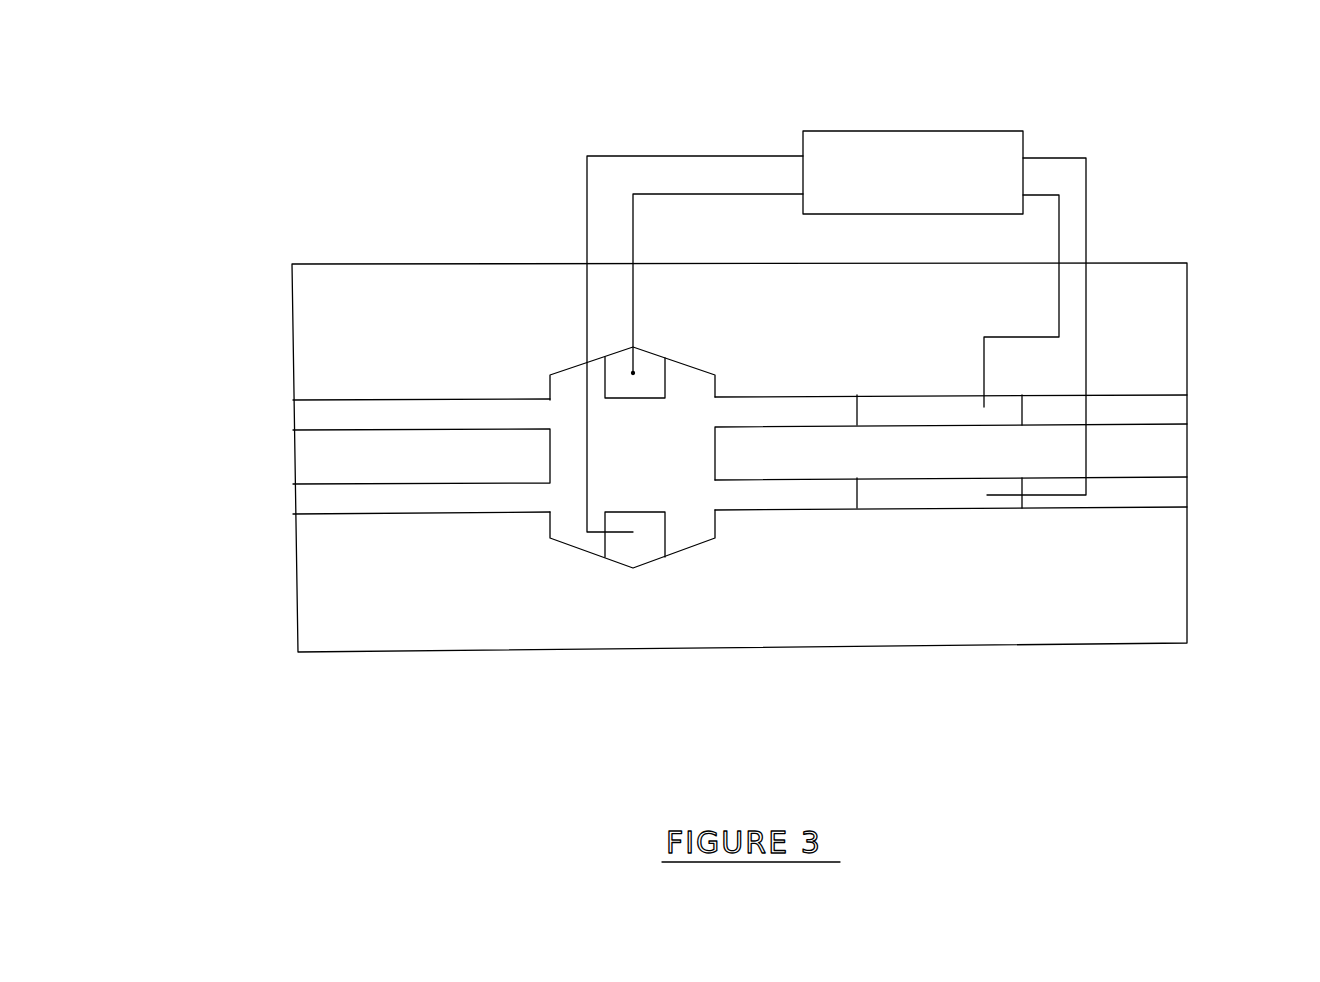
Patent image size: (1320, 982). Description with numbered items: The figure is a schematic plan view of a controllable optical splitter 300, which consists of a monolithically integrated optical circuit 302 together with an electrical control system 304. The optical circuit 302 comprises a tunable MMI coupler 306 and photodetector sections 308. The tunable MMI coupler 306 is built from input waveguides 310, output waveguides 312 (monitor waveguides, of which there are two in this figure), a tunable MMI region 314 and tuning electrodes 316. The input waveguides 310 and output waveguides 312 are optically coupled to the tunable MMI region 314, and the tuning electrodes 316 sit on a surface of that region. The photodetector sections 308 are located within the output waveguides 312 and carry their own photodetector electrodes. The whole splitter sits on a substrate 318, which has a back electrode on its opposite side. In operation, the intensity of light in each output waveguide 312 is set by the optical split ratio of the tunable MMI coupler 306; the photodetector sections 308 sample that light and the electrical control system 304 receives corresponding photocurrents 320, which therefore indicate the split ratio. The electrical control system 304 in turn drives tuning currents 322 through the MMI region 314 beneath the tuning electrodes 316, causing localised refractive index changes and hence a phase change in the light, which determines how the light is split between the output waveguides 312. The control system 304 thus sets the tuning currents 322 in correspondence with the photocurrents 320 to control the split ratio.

The controllable optical splitter 300 is at (316, 117).
The monolithically integrated optical circuit 302 is at (346, 574).
The electrical control system 304 is at (913, 172).
The tunable MMI coupler 306 is at (825, 442).
The photodetector sections 308 is at (890, 412).
The input waveguides 310 is at (308, 502).
The output waveguides 312 is at (1175, 409).
The tunable MMI region 314 is at (688, 558).
The tuning electrodes 316 is at (624, 550).
The substrate 318 is at (618, 360).
The photocurrents 320 is at (1060, 225).
The tuning currents 322 is at (706, 191).